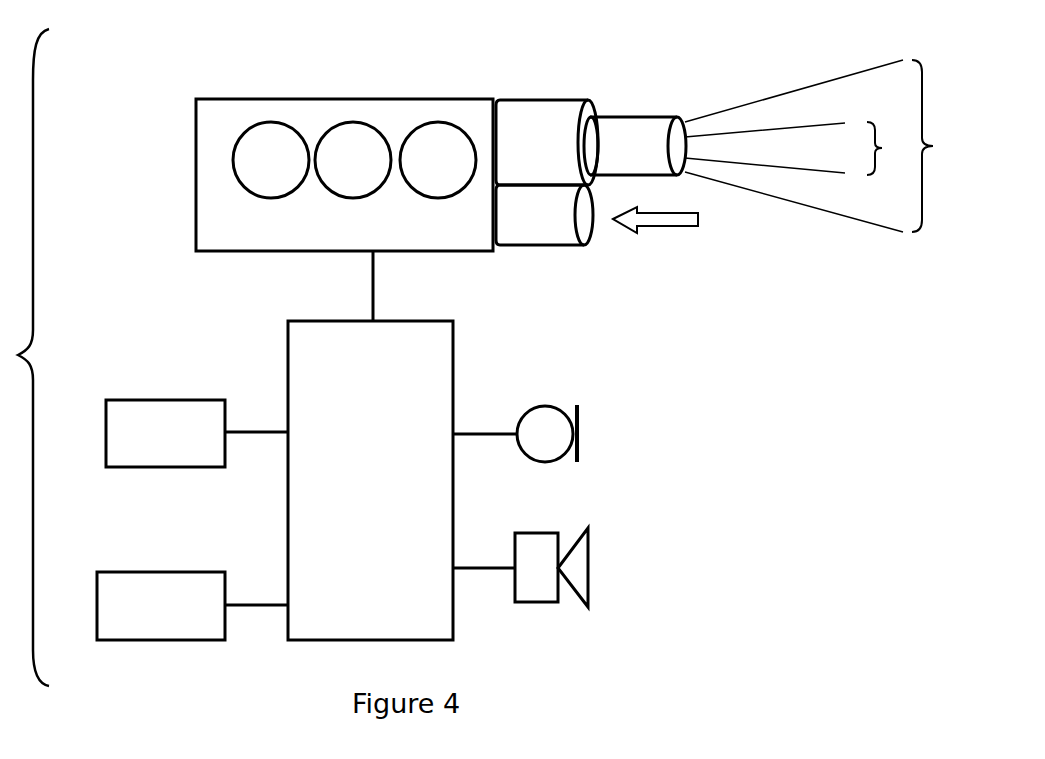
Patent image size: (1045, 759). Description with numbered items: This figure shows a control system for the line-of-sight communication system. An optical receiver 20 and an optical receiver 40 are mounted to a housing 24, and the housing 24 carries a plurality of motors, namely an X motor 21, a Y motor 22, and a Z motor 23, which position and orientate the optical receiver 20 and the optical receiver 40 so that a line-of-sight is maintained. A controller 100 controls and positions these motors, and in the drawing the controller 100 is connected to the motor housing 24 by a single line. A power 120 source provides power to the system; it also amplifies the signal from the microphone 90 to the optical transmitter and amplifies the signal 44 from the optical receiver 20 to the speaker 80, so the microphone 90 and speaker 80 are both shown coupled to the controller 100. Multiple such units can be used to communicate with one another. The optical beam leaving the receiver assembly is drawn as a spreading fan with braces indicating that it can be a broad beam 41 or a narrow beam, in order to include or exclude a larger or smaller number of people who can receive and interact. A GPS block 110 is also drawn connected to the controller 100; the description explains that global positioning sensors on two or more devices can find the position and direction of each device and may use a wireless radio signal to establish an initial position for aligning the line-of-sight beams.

The optical receiver 20 is at (537, 245).
The X motor 21 is at (267, 124).
The Y motor 22 is at (358, 124).
The Z motor 23 is at (437, 124).
The housing 24 is at (196, 155).
The optical receiver 40 is at (552, 100).
The broad beam 41 is at (788, 93).
The signal 44 is at (662, 225).
The speaker 80 is at (588, 582).
The microphone 90 is at (580, 440).
The controller 100 is at (287, 340).
The GPS 110 is at (152, 572).
The power source 120 is at (163, 467).